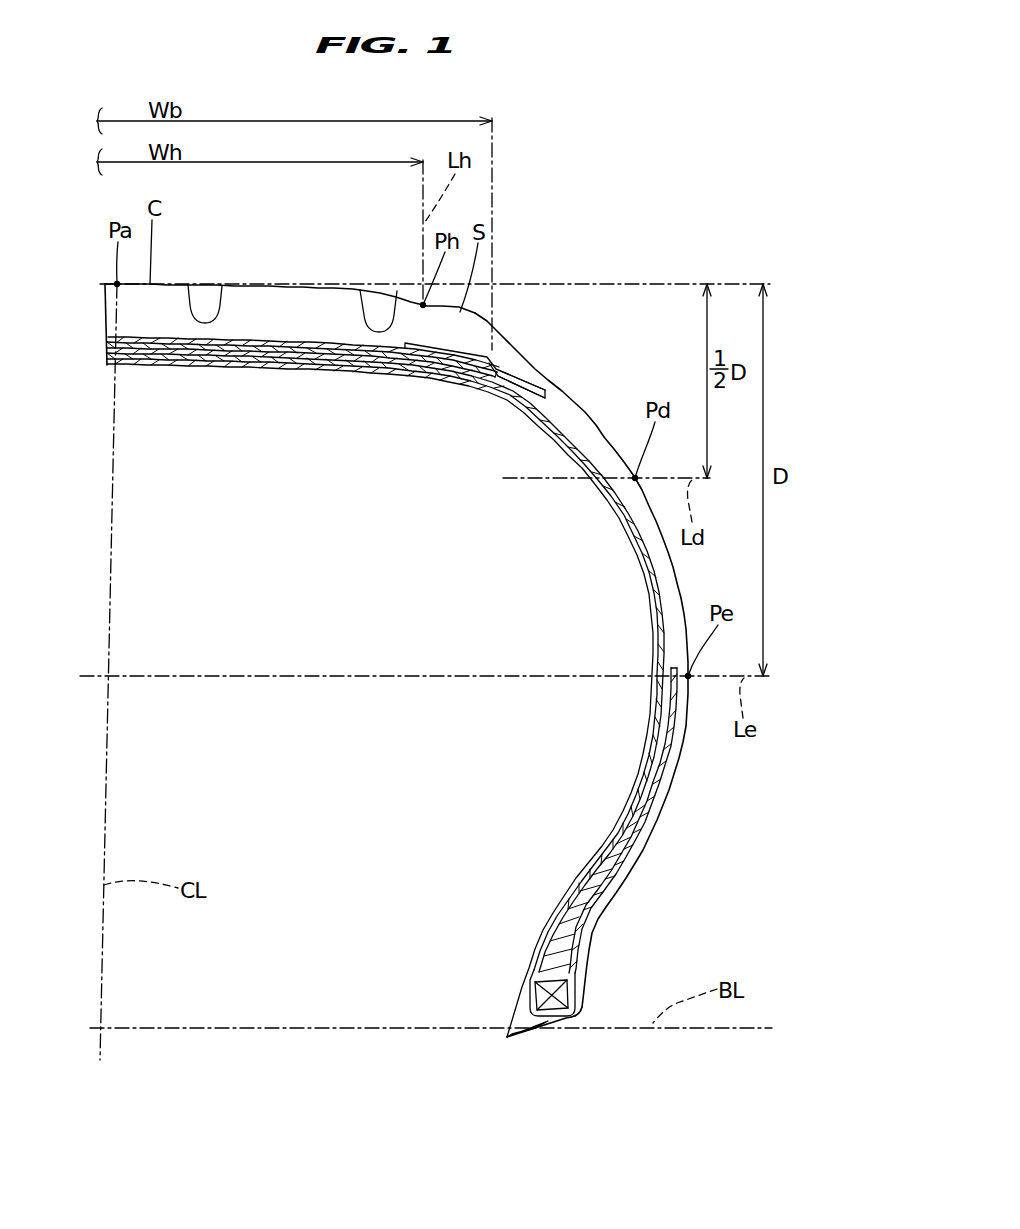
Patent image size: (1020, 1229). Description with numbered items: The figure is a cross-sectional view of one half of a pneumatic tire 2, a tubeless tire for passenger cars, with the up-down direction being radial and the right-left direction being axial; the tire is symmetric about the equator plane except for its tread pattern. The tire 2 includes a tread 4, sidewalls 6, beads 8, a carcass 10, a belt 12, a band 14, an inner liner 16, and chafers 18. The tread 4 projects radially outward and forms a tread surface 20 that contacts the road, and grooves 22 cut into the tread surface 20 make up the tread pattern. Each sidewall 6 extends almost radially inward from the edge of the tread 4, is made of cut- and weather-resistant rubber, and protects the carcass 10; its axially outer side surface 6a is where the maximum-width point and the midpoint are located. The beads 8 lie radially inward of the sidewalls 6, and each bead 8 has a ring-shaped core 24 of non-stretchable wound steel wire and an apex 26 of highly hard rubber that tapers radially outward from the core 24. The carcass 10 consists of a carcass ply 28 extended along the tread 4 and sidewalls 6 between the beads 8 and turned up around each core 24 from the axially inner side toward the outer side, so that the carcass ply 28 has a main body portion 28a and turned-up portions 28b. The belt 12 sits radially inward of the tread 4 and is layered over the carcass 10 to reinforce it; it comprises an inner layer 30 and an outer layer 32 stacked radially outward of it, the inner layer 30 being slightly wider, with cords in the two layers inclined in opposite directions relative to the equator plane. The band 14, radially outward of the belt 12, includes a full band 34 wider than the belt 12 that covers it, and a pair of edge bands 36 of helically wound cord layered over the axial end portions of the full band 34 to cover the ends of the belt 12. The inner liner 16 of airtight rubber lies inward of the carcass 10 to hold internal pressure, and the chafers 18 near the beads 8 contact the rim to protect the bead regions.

The pneumatic tire 2 is at (700, 197).
The tread 4 is at (327, 288).
The sidewall 6 is at (680, 768).
The axially outer side surface 6a is at (678, 575).
The bead 8 is at (455, 920).
The carcass 10 is at (318, 370).
The belt 12 is at (272, 424).
The band 14 is at (598, 303).
The inner liner 16 is at (390, 376).
The chafer 18 is at (548, 1022).
The tread surface 20 is at (290, 290).
The groove 22 is at (208, 287).
The core 24 is at (540, 997).
The apex 26 is at (555, 937).
The carcass ply 28 is at (415, 684).
The main body portion 28a is at (603, 852).
The turned-up portion 28b is at (633, 827).
The inner layer 30 is at (213, 358).
The outer layer 32 is at (253, 347).
The full band 34 is at (513, 375).
The edge band 36 is at (483, 357).